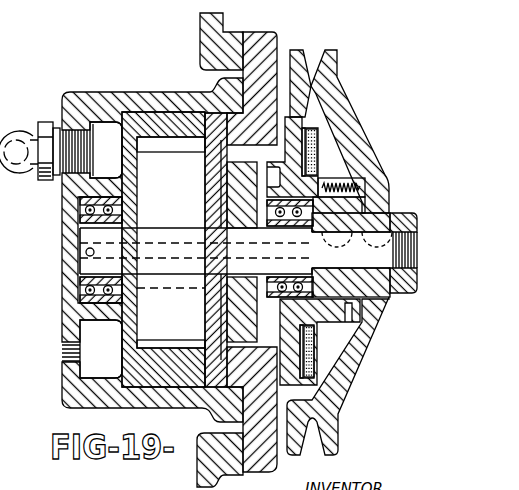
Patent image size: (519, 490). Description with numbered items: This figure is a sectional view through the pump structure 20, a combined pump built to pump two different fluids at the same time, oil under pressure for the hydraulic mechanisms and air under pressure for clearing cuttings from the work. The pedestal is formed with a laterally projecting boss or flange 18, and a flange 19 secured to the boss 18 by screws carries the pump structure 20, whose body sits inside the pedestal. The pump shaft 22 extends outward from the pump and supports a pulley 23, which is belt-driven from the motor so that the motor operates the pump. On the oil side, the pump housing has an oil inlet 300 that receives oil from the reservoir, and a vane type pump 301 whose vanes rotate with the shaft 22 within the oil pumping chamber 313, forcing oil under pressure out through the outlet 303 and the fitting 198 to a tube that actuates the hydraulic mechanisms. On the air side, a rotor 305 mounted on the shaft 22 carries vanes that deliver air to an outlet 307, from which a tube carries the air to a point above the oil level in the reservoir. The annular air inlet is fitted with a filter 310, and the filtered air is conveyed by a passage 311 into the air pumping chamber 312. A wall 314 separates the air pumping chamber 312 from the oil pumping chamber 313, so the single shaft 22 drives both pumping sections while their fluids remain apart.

The boss or flange 18 is at (237, 33).
The flange 19 is at (277, 42).
The pump structure 20 is at (124, 89).
The pump shaft 22 is at (358, 247).
The pulley 23 is at (352, 382).
The fitting 198 is at (18, 132).
The oil inlet 300 is at (70, 351).
The vane type pump 301 is at (170, 152).
The outlet 303 is at (108, 135).
The rotor 305 is at (316, 135).
The outlet 307 is at (85, 265).
The filter 310 is at (318, 140).
The passage 311 is at (292, 163).
The air pumping chamber 312 is at (337, 72).
The oil pumping chamber 313 is at (148, 140).
The wall 314 is at (290, 52).